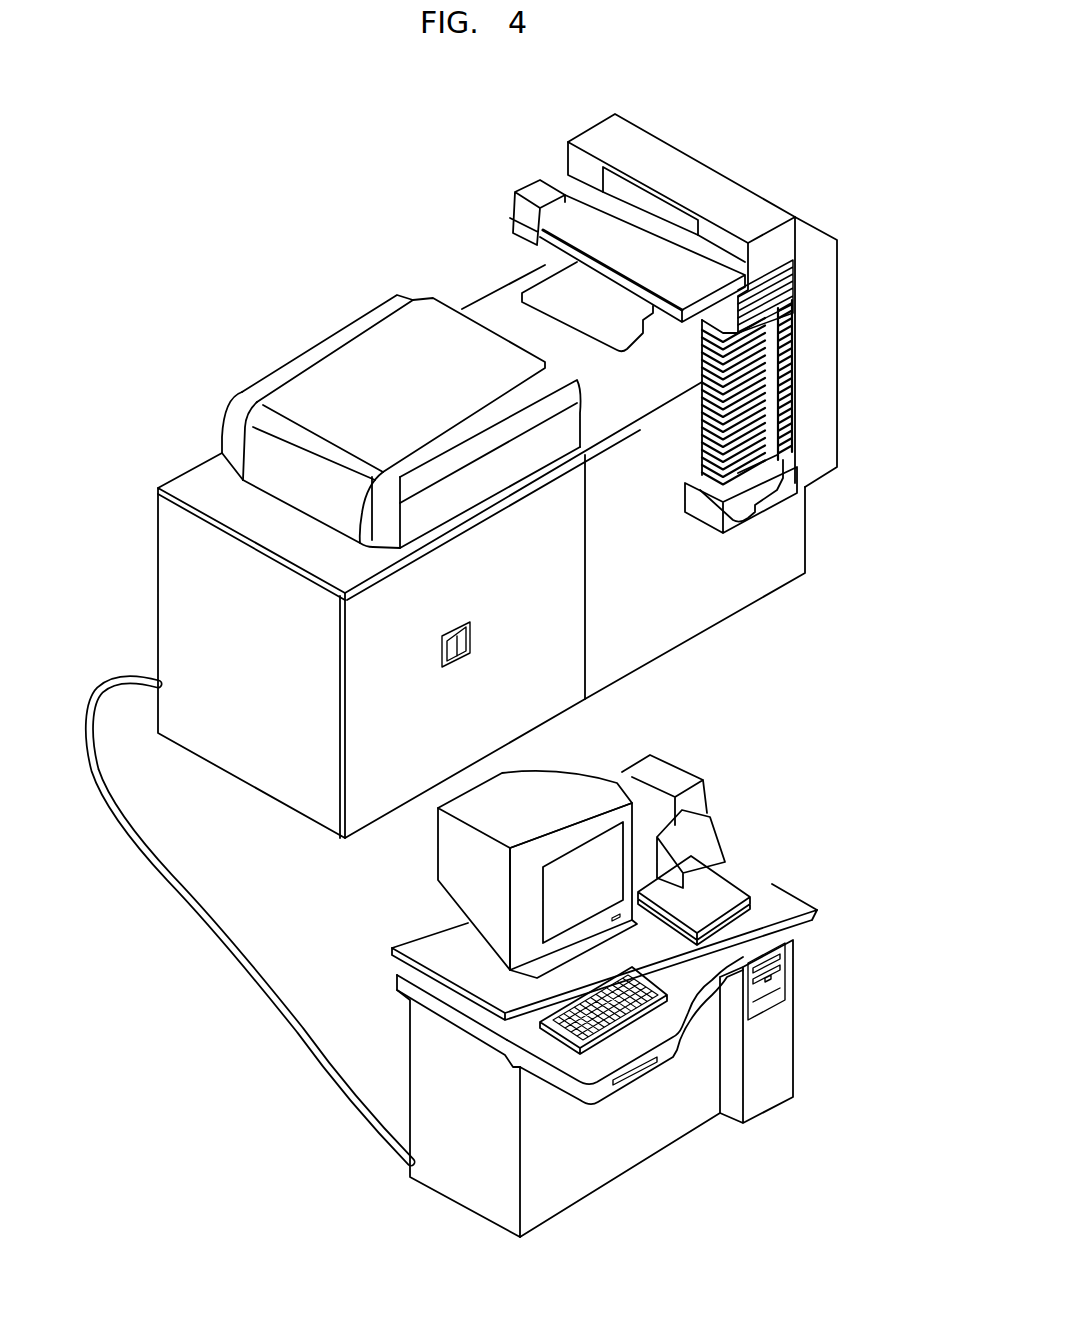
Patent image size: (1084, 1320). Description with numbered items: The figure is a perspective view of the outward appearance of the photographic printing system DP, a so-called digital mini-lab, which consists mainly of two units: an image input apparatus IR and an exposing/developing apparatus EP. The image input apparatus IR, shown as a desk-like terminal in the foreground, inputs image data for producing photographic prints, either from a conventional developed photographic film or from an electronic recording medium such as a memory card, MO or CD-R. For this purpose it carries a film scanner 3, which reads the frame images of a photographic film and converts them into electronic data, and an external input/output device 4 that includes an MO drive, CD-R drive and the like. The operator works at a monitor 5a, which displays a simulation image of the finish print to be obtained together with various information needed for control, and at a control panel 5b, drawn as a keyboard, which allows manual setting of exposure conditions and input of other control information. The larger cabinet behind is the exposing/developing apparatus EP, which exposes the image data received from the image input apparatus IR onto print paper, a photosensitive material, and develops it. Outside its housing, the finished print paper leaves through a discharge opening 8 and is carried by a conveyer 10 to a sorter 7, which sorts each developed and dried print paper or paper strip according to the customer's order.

The exposing/developing apparatus EP is at (520, 476).
The conveyer 10 is at (590, 238).
The discharge opening 8 is at (655, 203).
The sorter 7 is at (785, 381).
The image input apparatus IR is at (648, 988).
The film scanner 3 is at (715, 803).
The monitor 5a is at (607, 837).
The control panel 5b is at (566, 1041).
The external input/output device 4 is at (790, 980).
The photographic printing system DP is at (186, 1003).